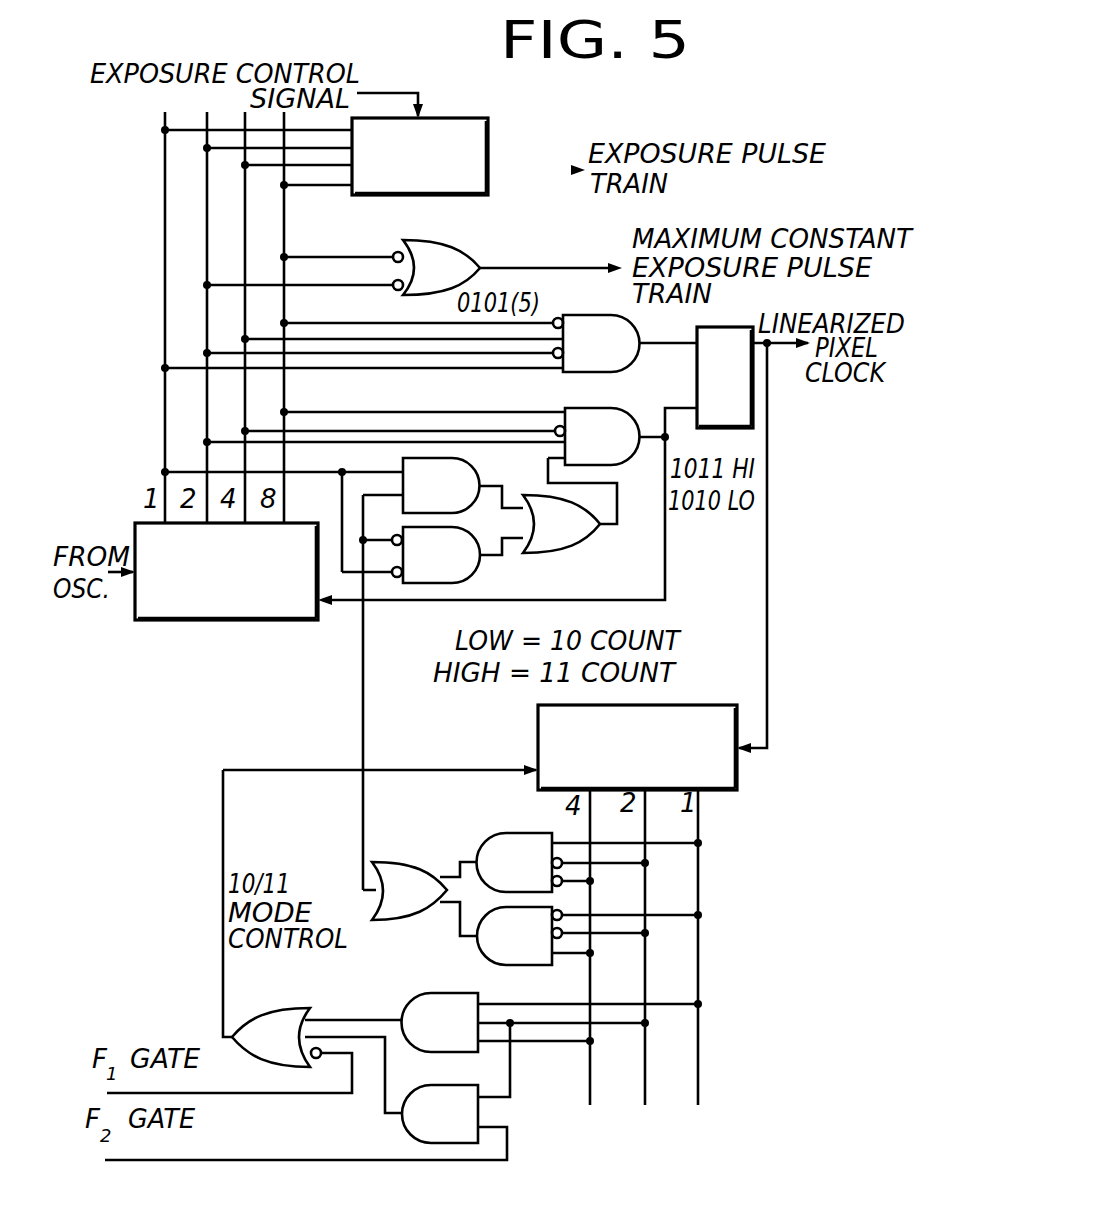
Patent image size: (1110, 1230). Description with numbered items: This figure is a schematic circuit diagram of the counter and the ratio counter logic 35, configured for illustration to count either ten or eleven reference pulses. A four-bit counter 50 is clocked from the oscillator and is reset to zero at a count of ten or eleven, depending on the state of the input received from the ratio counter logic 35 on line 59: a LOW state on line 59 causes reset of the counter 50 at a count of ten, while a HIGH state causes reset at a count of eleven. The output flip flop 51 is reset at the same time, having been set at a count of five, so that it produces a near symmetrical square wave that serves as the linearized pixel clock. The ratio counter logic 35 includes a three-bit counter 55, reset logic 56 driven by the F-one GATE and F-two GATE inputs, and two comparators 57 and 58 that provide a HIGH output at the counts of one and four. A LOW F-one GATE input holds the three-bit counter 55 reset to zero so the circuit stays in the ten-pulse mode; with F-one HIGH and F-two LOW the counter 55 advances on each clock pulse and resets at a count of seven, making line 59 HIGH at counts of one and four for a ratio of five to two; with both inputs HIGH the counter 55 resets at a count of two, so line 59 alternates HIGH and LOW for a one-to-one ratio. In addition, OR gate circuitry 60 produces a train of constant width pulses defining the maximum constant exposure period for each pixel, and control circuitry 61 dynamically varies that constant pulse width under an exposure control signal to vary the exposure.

The ratio counter logic 35 is at (762, 870).
The 4-bit counter 50 is at (197, 625).
The output flip flop 51 is at (697, 392).
The 3-bit counter 55 is at (740, 777).
The reset logic 56 is at (198, 984).
The comparator 57 is at (492, 833).
The comparator 58 is at (490, 962).
The line 59 is at (368, 663).
The OR gate circuitry 60 is at (468, 247).
The control circuitry 61 is at (490, 137).